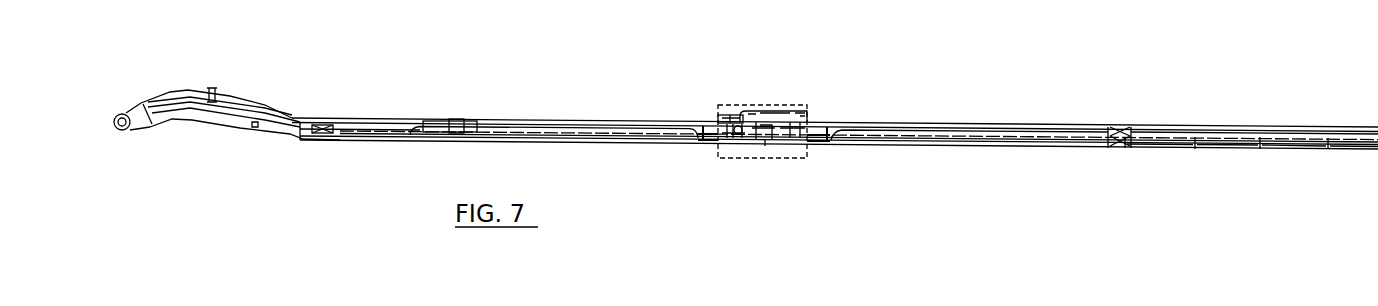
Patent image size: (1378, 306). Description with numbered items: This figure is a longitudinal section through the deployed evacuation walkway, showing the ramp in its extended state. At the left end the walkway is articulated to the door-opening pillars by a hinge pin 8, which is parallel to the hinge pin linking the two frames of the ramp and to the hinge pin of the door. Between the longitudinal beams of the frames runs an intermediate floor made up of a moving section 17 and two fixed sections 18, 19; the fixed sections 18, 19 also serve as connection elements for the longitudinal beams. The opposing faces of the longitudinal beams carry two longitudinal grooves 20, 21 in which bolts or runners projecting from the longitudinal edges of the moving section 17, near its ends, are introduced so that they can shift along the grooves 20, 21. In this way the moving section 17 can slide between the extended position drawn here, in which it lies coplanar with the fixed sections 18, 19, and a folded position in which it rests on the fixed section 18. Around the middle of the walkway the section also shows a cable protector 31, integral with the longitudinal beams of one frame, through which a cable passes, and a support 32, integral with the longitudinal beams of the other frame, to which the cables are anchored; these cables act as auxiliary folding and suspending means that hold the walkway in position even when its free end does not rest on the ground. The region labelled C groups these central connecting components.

The hinge pin 8 is at (128, 132).
The moving section 17 is at (630, 135).
The fixed section 18 is at (358, 135).
The fixed section 19 is at (710, 140).
The longitudinal groove 20 is at (540, 125).
The longitudinal groove 21 is at (343, 119).
The cable protector 31 is at (733, 115).
The support 32 is at (790, 115).
The connecting device C is at (757, 107).